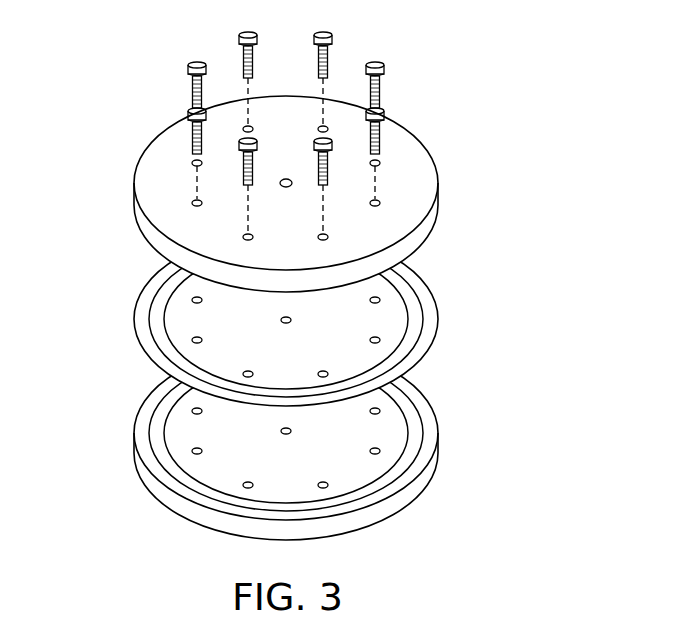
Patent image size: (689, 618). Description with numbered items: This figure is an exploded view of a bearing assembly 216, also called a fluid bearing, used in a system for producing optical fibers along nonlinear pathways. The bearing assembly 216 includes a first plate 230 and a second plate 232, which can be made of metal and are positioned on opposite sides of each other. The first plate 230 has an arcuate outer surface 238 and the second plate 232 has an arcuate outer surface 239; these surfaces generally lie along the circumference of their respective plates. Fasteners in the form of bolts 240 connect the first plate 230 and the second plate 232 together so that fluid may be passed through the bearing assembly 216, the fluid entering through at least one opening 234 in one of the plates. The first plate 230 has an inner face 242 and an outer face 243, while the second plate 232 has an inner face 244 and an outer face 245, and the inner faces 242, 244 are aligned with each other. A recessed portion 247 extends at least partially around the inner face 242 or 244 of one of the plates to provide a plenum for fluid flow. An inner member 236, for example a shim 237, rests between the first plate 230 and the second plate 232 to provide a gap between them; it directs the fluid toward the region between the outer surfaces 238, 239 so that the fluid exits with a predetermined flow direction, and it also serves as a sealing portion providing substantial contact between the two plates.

The bearing assembly 216 is at (328, 309).
The first plate 230 is at (270, 186).
The second plate 232 is at (309, 474).
The opening 234 is at (287, 179).
The inner member 236 is at (314, 319).
The shim 237 is at (146, 314).
The arcuate outer surface of first plate 238 is at (436, 212).
The arcuate outer surface of second plate 239 is at (138, 477).
The bolts 240 is at (332, 36).
The inner face of first plate 242 is at (138, 232).
The outer face of first plate 243 is at (162, 148).
The inner face of second plate 244 is at (430, 413).
The outer face of second plate 245 is at (386, 525).
The recessed portion 247 is at (162, 425).